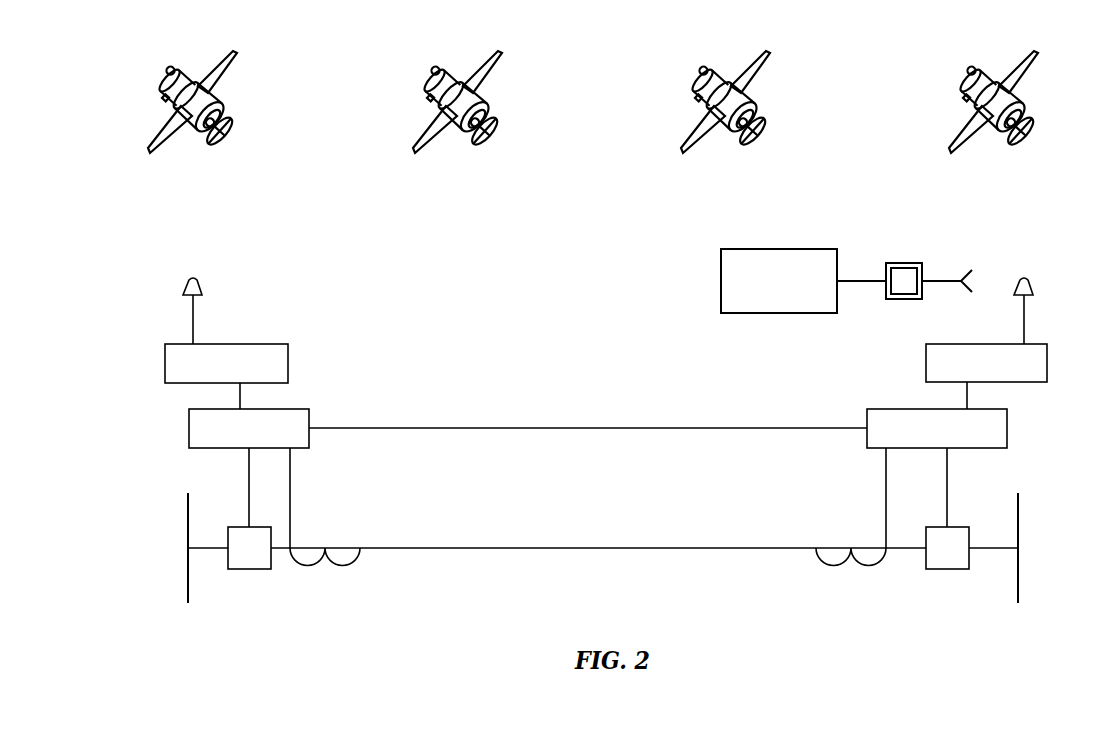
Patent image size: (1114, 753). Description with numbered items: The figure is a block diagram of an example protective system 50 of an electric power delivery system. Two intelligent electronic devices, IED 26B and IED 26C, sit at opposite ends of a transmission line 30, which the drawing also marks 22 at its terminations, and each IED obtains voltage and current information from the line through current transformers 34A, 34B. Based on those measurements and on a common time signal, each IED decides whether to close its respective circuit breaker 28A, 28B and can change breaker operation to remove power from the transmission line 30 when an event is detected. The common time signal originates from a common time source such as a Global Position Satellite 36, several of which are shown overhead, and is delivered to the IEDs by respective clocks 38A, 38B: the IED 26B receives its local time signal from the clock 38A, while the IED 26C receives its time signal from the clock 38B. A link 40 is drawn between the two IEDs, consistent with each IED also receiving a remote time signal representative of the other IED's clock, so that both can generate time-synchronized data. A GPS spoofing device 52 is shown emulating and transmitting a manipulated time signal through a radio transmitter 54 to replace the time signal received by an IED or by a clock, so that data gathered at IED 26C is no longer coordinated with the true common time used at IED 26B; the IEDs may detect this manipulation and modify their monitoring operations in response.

The bus / power line 22 is at (188, 578).
The IED 26B is at (189, 425).
The IED 26C is at (1007, 425).
The circuit breaker 28A is at (250, 569).
The circuit breaker 28B is at (947, 569).
The transmission line 30 is at (573, 548).
The current transformer 34A is at (342, 566).
The current transformer 34B is at (833, 566).
The Global Position Satellite 36 is at (108, 102).
The clock 38A is at (165, 358).
The clock 38B is at (1047, 361).
The communication link 40 is at (573, 428).
The protective system 50 is at (463, 250).
The GPS spoofing device 52 is at (780, 249).
The radio transmitter 54 is at (905, 263).